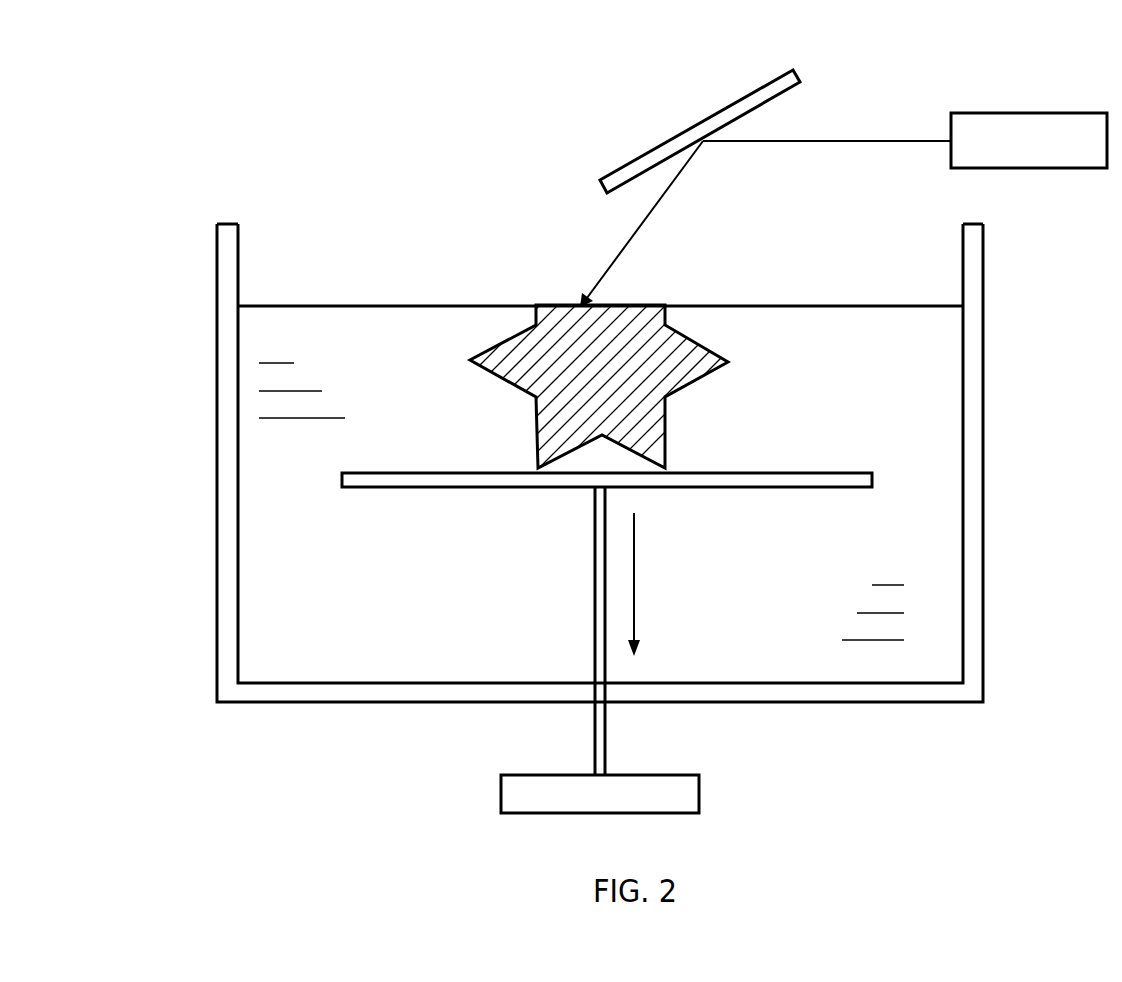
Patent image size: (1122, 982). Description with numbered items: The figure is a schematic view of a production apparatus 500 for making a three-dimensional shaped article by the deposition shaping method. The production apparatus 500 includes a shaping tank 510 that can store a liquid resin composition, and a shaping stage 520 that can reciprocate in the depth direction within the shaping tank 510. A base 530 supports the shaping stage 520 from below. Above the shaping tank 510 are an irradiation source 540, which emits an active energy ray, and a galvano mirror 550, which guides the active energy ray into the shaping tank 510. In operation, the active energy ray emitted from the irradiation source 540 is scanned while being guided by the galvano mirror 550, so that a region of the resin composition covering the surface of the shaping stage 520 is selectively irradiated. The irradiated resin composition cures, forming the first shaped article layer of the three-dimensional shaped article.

The production apparatus 500 is at (112, 59).
The shaping tank 510 is at (226, 222).
The shaping stage 520 is at (740, 490).
The base 530 is at (704, 792).
The irradiation source 540 is at (1028, 112).
The galvano mirror 550 is at (737, 100).